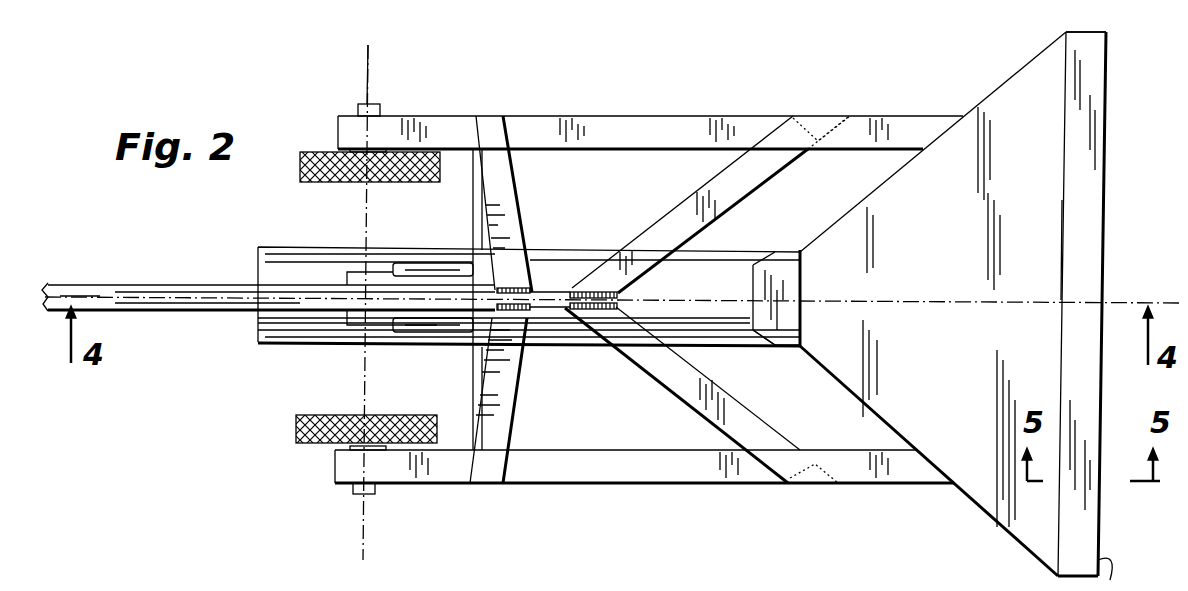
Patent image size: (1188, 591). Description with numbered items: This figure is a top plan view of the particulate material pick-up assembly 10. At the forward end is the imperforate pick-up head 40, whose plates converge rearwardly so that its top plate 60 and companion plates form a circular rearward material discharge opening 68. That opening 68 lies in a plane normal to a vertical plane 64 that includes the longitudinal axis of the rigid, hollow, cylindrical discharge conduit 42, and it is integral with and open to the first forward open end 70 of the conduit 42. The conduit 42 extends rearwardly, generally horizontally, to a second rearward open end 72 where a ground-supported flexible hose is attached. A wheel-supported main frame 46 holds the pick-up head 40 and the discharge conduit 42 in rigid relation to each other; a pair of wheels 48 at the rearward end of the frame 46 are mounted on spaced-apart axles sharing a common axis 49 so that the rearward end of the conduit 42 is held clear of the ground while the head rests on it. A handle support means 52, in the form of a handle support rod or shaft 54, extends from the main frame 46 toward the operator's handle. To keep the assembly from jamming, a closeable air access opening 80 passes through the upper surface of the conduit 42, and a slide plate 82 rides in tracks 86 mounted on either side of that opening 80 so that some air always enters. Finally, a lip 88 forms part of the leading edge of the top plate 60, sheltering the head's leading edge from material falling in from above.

The particulate material pick-up assembly 10 is at (675, 96).
The particulate material pick-up head 40 is at (1025, 82).
The pick-up assembly discharge conduit 42 is at (575, 257).
The main frame 46 is at (770, 145).
The wheels 48 is at (300, 168).
The common axis 49 is at (368, 76).
The handle support means 52 is at (236, 312).
The handle support rod or shaft 54 is at (172, 284).
The top plate 60 is at (995, 470).
The vertical plane 64 is at (1018, 301).
The rearward material discharge opening 68 is at (803, 254).
The first forward open end 70 is at (793, 337).
The second rearward open end 72 is at (258, 263).
The closeable air access opening 80 is at (455, 263).
The slide plate 82 is at (381, 277).
The tracks 86 is at (418, 262).
The lip 88 is at (1100, 244).